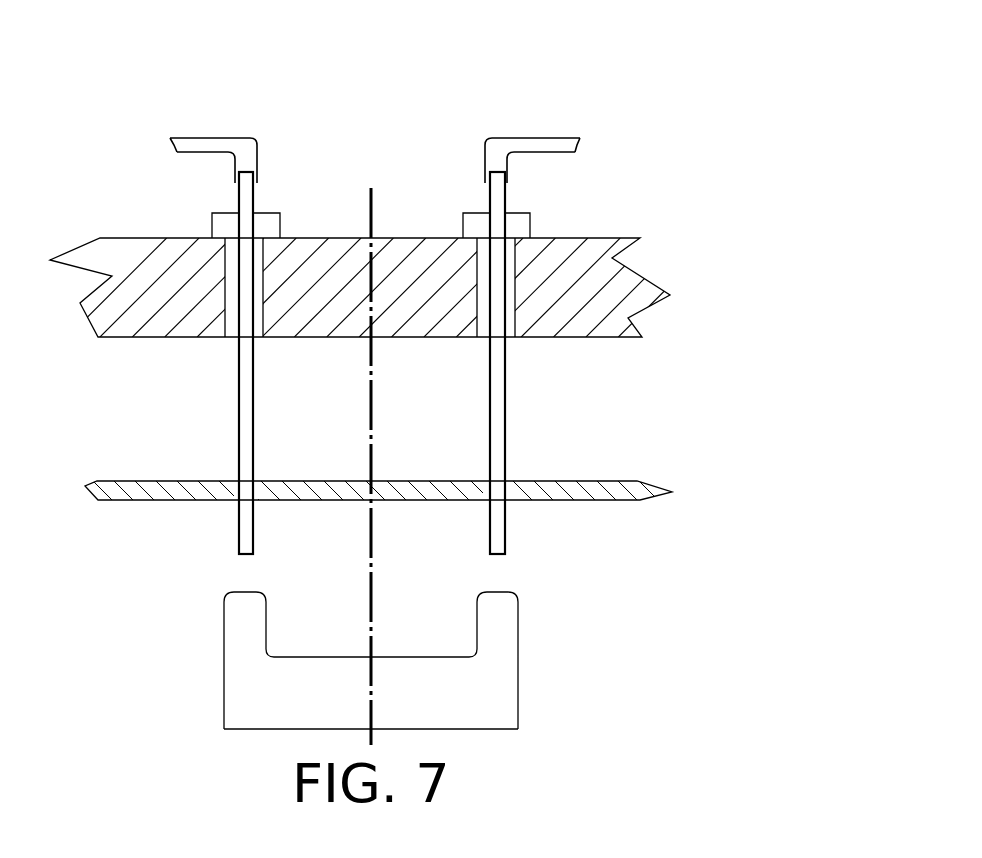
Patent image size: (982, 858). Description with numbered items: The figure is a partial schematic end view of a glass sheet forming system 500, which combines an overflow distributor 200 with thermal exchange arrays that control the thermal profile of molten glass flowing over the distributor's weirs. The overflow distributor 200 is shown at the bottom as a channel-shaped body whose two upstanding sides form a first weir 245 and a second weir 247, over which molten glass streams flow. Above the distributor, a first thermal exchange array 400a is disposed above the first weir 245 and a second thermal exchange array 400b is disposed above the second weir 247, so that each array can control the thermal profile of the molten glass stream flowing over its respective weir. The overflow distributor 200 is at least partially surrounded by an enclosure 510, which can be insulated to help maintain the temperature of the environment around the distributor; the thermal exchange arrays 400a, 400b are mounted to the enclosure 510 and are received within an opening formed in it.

The glass sheet forming system 500 is at (553, 83).
The enclosure 510 is at (628, 288).
The first thermal exchange array 400a is at (222, 225).
The second thermal exchange array 400b is at (520, 218).
The overflow distributor 200 is at (308, 692).
The first weir 245 is at (240, 592).
The second weir 247 is at (500, 591).